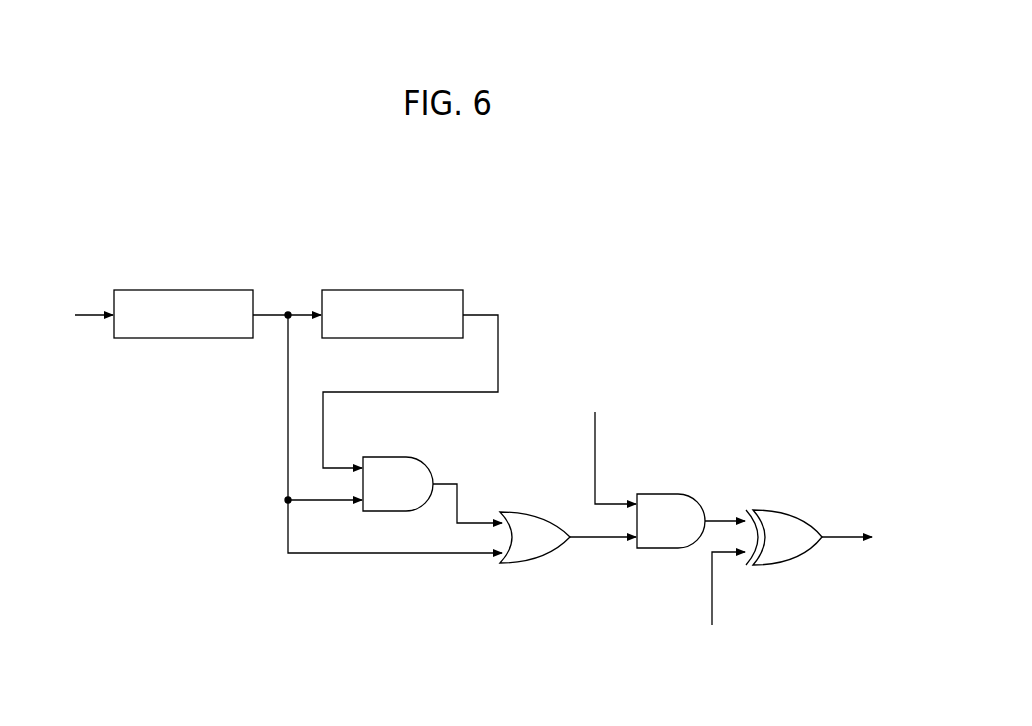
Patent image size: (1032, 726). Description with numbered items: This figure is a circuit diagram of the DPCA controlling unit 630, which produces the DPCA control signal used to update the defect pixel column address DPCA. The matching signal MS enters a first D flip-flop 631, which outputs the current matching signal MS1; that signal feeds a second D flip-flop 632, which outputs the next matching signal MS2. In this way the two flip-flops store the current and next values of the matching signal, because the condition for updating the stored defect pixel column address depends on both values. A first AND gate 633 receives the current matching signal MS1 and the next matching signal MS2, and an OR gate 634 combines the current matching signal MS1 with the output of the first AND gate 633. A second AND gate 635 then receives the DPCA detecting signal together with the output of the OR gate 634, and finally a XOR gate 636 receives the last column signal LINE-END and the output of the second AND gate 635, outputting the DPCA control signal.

The DPCA controlling unit 630 is at (644, 301).
The first D flip-flop 631 is at (202, 290).
The second D flip-flop 632 is at (412, 290).
The first AND gate 633 is at (385, 457).
The OR gate 634 is at (519, 512).
The second AND gate 635 is at (655, 494).
The XOR gate 636 is at (766, 510).